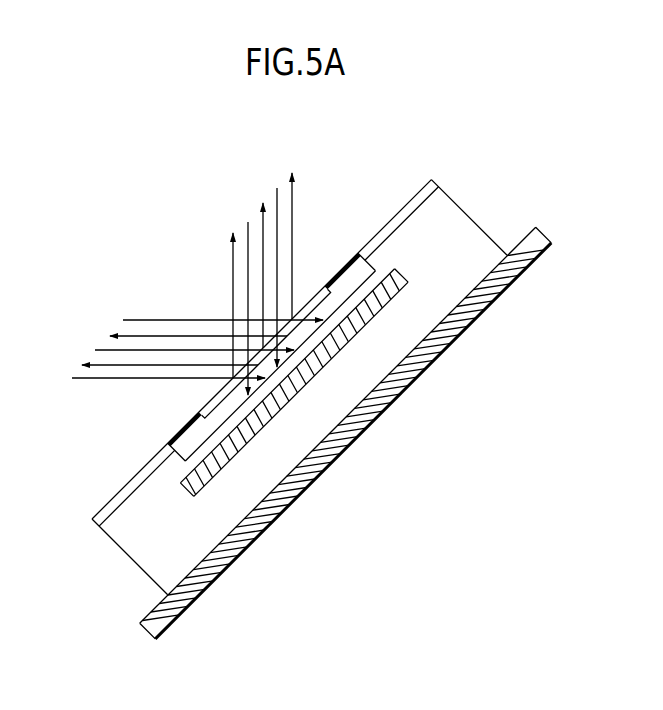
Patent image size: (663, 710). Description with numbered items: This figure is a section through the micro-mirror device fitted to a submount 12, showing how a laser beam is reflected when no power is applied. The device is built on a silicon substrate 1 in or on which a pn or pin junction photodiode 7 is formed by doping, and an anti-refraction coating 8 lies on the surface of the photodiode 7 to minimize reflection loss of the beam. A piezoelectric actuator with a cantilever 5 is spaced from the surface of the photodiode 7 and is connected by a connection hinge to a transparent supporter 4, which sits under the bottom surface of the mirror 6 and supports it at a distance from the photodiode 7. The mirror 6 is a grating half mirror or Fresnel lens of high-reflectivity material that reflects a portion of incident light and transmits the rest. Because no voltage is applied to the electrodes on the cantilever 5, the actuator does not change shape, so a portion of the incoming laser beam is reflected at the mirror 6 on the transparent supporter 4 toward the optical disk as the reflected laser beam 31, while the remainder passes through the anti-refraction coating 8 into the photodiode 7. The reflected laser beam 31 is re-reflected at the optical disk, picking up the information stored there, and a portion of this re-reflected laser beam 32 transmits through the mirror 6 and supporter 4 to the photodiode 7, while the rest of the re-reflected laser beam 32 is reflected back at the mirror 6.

The substrate 1 is at (463, 237).
The transparent supporter 4 is at (264, 332).
The cantilever 5 is at (175, 438).
The mirror 6 is at (307, 307).
The photodiode 7 is at (190, 485).
The anti-refraction coating 8 is at (443, 212).
The submount 12 is at (307, 473).
The laser beam reflected toward optical disk 31 is at (233, 267).
The re-reflected laser beam 32 is at (248, 222).